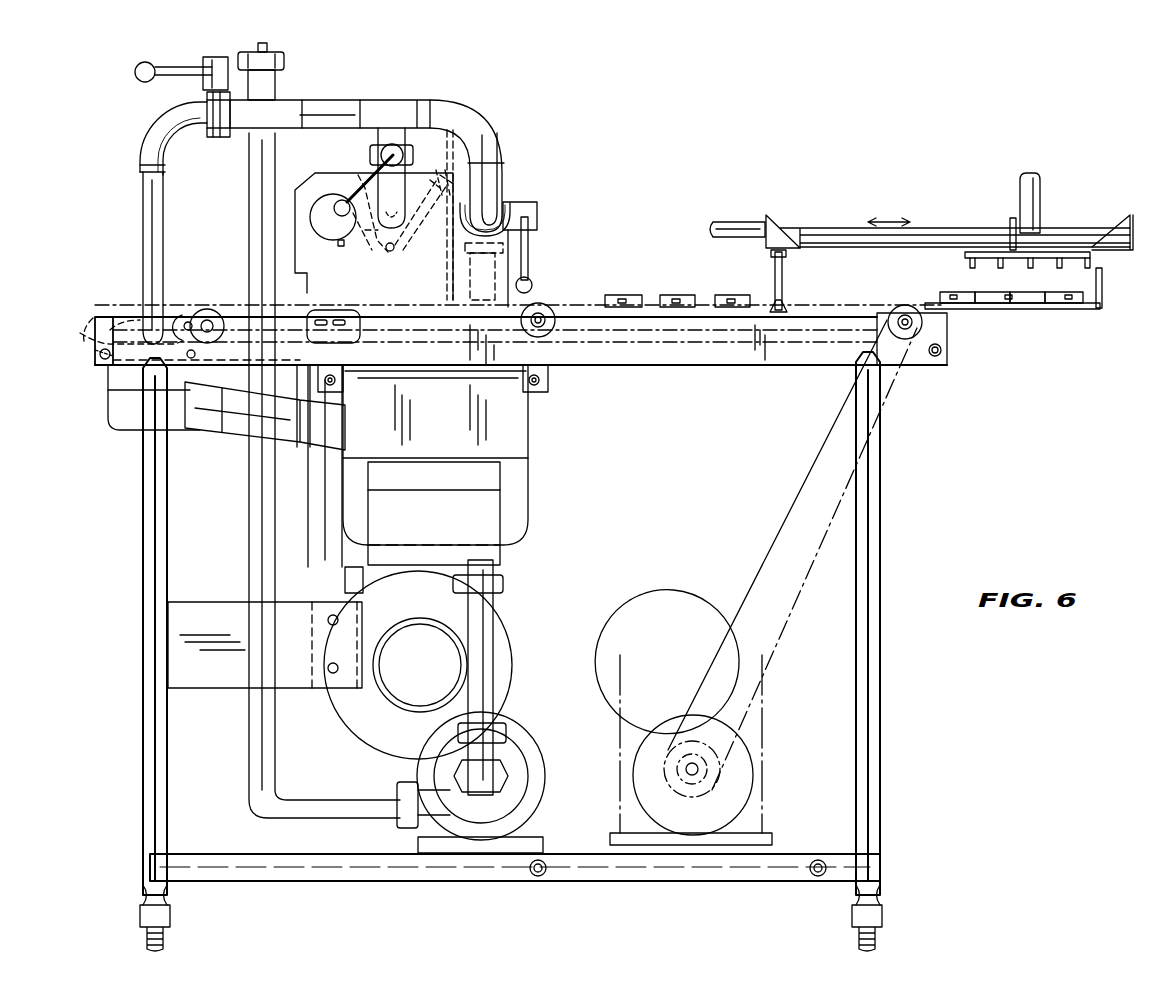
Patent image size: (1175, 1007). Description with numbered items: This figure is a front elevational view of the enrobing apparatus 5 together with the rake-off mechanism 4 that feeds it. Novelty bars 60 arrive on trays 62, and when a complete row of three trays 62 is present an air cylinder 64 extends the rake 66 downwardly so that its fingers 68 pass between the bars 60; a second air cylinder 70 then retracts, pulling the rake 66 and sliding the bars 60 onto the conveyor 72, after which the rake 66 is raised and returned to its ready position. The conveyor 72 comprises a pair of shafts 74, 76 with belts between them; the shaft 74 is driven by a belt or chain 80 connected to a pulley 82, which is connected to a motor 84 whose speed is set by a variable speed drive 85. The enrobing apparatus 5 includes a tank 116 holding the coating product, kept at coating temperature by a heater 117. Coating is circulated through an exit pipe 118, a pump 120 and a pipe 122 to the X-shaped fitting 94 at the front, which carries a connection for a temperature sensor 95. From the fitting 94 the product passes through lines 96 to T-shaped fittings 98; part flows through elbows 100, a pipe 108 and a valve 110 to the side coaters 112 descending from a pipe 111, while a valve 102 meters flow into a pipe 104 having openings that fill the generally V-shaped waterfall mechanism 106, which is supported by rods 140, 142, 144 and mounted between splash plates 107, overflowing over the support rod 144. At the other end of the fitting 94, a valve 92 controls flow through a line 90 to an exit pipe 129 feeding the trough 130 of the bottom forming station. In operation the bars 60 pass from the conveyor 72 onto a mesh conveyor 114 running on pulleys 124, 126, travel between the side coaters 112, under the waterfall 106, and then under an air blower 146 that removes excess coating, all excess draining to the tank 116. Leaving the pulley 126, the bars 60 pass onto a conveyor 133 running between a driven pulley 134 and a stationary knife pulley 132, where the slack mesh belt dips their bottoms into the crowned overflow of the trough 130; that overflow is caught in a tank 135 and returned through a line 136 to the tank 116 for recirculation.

The rake-off mechanism 4 is at (870, 202).
The enrobing apparatus 5 is at (587, 212).
The novelty bars 60 is at (675, 296).
The trays 62 is at (1102, 300).
The air cylinder 64 is at (1040, 195).
The rake 66 is at (1068, 252).
The fingers 68 is at (1065, 265).
The air cylinder 70 is at (745, 220).
The conveyor 72 is at (820, 345).
The shaft 74 is at (945, 345).
The shaft 76 is at (545, 338).
The belt or chain 80 is at (905, 395).
The pulley 82 is at (705, 785).
The motor 84 is at (755, 760).
The variable speed drive 85 is at (678, 580).
The line 90 is at (160, 175).
The valves 92 is at (214, 137).
The X-shaped fitting 94 is at (272, 100).
The temperature sensor 95 is at (267, 46).
The lines 96 is at (365, 78).
The T-shaped fittings 98 is at (405, 78).
The elbows 100 is at (470, 100).
The valve 102 is at (403, 152).
The pipe 104 is at (428, 182).
The waterfall mechanism 106 is at (367, 225).
The splash plates 107 is at (440, 272).
The pipe 108 is at (490, 173).
The valve 110 is at (530, 222).
The pipe 111 is at (515, 203).
The side coaters 112 is at (470, 278).
The conveyor 114 is at (505, 364).
The tank 116 is at (530, 440).
The heater 117 is at (445, 532).
The exit pipe 118 is at (492, 625).
The pump 120 is at (520, 760).
The pipe 122 is at (258, 735).
The pulley 124 is at (475, 333).
The pulley 126 is at (207, 320).
The exit pipe 129 is at (150, 300).
The trough 130 is at (100, 330).
The stationary knife pulley 132 is at (98, 348).
The conveyor 133 is at (95, 318).
The driven pulley 134 is at (176, 340).
The tank 135 is at (112, 432).
The line 136 is at (245, 440).
The rod 140 is at (332, 185).
The rod 142 is at (388, 255).
The support rod 144 is at (421, 214).
The air blower 146 is at (318, 235).